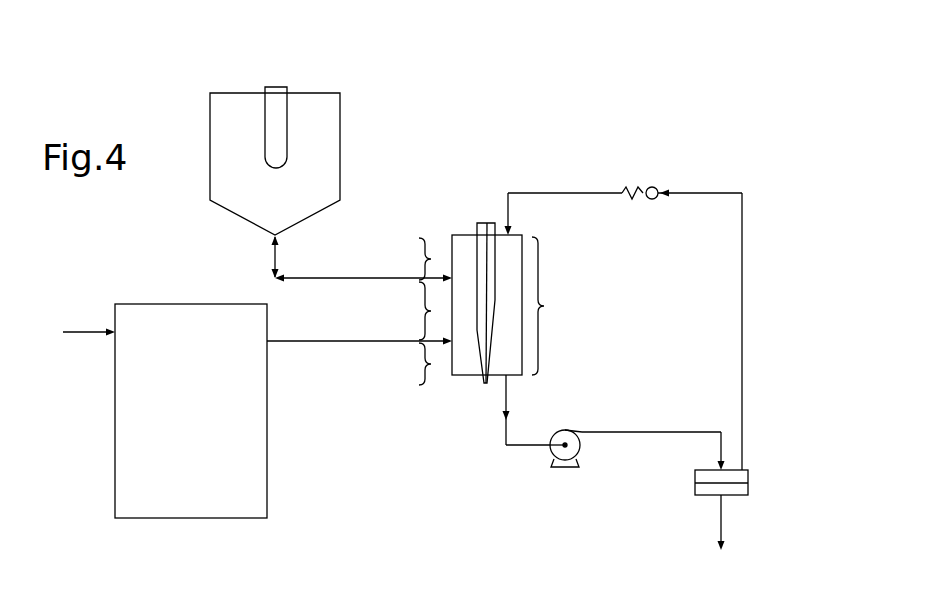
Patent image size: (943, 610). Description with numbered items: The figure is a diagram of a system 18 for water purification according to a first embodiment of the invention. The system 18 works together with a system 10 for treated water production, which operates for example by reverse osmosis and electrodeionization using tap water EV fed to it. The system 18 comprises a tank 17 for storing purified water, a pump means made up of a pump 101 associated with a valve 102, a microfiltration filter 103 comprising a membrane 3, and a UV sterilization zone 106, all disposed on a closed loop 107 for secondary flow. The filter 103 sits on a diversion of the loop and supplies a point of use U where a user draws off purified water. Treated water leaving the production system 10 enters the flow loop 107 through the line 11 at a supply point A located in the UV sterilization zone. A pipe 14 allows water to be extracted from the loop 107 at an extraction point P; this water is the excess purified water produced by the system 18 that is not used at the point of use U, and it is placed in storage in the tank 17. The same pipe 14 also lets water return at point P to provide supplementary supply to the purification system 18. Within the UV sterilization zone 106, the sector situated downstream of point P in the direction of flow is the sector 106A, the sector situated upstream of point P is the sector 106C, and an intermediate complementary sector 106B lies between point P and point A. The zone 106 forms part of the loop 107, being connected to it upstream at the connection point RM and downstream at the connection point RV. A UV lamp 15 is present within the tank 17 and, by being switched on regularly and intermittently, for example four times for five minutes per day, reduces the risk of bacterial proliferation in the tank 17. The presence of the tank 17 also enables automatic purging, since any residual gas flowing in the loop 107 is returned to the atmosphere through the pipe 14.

The membrane 3 is at (705, 495).
The treated water production system 10 is at (267, 438).
The line 11 is at (326, 341).
The pipe 14 is at (314, 248).
The UV lamp 15 is at (273, 87).
The tank 17 is at (340, 135).
The water purification system 18 is at (698, 150).
The pump 101 is at (553, 463).
The valve 102 is at (640, 192).
The microfiltration filter 103 is at (748, 477).
The UV sterilization zone 106 is at (519, 303).
The sector 106A is at (394, 364).
The intermediate complementary sector 106B is at (394, 311).
The sector 106C is at (325, 278).
The closed loop 107 is at (742, 326).
The tap water EV is at (70, 333).
The extraction point P is at (452, 270).
The supply point A is at (452, 343).
The upstream connection point RM is at (510, 235).
The downstream connection point RV is at (522, 375).
The point of use U is at (730, 495).